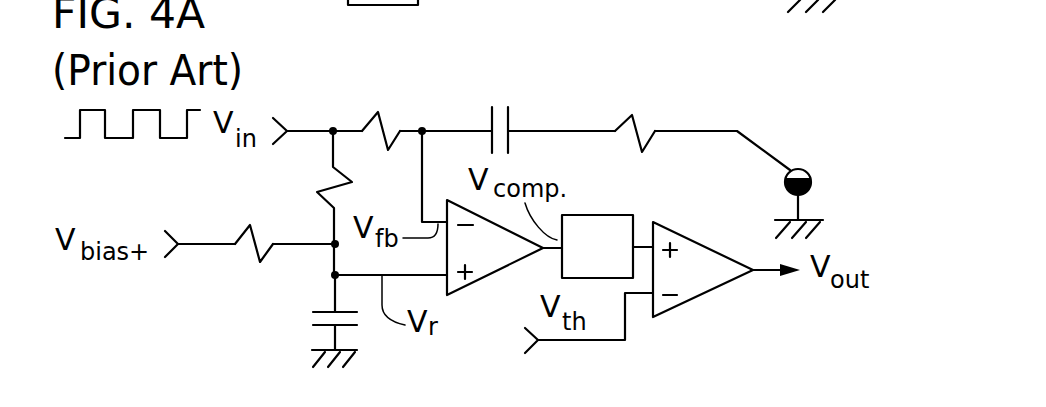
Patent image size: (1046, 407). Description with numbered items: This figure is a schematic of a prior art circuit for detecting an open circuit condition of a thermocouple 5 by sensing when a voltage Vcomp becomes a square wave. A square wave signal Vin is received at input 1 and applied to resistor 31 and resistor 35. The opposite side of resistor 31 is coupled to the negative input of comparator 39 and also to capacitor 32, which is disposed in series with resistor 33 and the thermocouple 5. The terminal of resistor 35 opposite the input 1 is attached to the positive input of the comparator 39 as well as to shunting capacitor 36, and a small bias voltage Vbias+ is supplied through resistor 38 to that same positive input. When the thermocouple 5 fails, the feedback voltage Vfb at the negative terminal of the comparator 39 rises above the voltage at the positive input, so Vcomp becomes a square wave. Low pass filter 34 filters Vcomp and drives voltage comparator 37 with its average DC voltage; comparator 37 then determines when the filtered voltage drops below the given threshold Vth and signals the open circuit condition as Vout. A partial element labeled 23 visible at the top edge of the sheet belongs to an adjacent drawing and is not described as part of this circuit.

The input 1 is at (313, 130).
The thermocouple 5 is at (810, 160).
The element of adjacent figure 23 is at (463, 0).
The resistor 31 is at (388, 122).
The capacitor 32 is at (498, 100).
The resistor 33 is at (640, 125).
The low pass filter 34 is at (593, 215).
The resistor 35 is at (332, 184).
The shunting capacitor 36 is at (307, 315).
The voltage comparator 37 is at (707, 247).
The resistor 38 is at (248, 250).
The comparator 39 is at (482, 278).